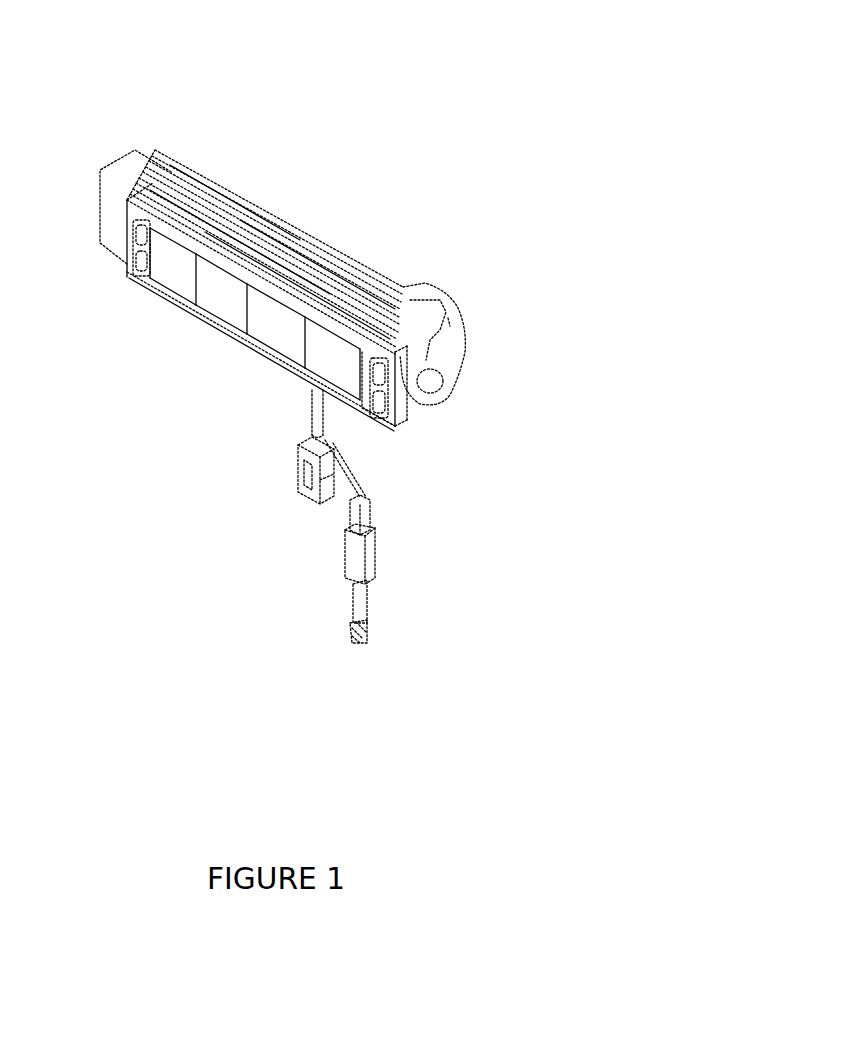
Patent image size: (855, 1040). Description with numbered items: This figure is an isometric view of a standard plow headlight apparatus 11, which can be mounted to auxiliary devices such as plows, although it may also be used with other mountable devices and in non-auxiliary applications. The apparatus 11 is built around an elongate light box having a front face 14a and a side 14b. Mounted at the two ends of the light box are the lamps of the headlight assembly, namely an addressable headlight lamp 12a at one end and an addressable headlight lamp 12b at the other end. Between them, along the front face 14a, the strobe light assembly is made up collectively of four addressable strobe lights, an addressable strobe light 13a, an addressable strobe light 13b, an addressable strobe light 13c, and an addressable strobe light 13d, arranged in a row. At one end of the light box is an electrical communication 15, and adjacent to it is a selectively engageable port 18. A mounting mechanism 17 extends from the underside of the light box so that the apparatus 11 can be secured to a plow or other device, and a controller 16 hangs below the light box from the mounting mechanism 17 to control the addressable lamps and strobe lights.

The plow headlight apparatus 11 is at (128, 128).
The addressable headlight lamp 12a is at (143, 268).
The addressable headlight lamp 12b is at (383, 373).
The addressable strobe light 13a is at (168, 258).
The addressable strobe light 13b is at (220, 287).
The addressable strobe light 13c is at (275, 312).
The addressable strobe light 13d is at (325, 343).
The front face 14a is at (153, 230).
The side 14b is at (220, 205).
The electrical communication 15 is at (457, 335).
The controller 16 is at (310, 455).
The mounting mechanism 17 is at (310, 382).
The selectively engageable port 18 is at (427, 382).